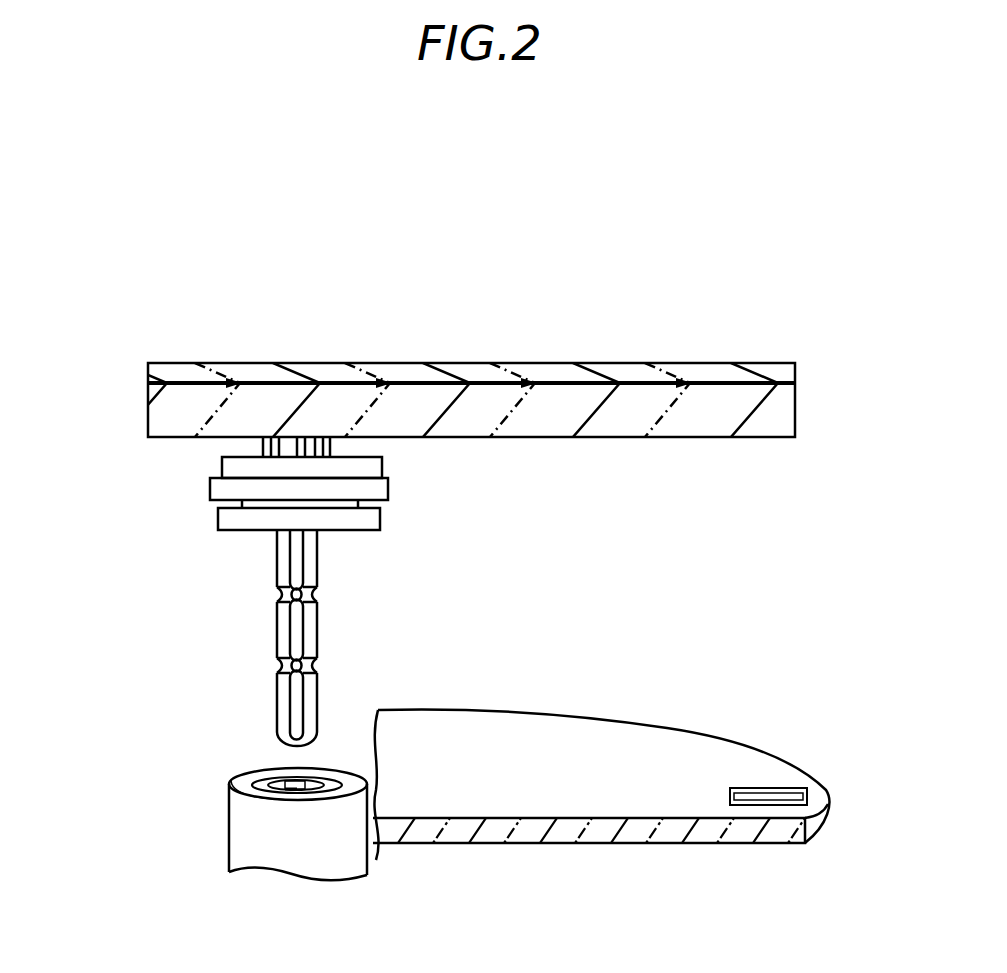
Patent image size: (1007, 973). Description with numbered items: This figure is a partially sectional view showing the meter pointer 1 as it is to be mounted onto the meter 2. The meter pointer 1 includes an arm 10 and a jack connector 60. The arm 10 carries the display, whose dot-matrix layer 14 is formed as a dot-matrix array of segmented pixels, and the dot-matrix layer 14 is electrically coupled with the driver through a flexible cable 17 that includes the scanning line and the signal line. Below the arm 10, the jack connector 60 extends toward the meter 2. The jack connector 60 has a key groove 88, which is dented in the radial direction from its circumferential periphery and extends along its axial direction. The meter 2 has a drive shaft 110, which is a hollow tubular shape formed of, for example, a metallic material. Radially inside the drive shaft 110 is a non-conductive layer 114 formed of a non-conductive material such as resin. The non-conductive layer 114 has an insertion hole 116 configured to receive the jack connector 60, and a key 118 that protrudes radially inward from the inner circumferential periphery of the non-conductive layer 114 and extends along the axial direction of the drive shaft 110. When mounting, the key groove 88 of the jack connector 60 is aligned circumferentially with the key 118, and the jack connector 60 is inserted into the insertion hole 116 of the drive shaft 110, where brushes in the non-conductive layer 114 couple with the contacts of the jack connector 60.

The meter pointer 1 is at (234, 317).
The meter 2 is at (759, 721).
The arm 10 is at (476, 345).
The dot-matrix layer 14 is at (642, 378).
The flexible cable 17 is at (262, 450).
The jack connector 60 is at (198, 510).
The key groove 88 is at (297, 628).
The drive shaft 110 is at (206, 857).
The non-conductive layer 114 is at (277, 780).
The insertion hole 116 is at (288, 783).
The key 118 is at (240, 792).